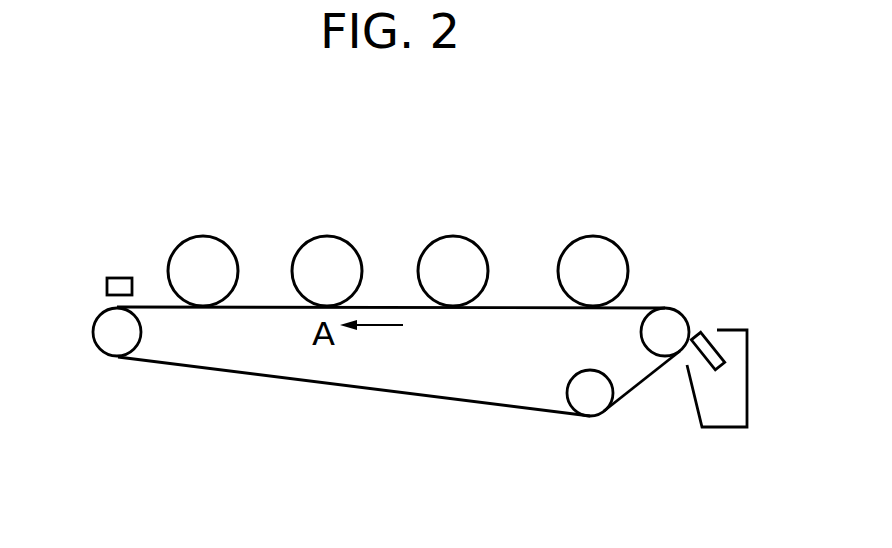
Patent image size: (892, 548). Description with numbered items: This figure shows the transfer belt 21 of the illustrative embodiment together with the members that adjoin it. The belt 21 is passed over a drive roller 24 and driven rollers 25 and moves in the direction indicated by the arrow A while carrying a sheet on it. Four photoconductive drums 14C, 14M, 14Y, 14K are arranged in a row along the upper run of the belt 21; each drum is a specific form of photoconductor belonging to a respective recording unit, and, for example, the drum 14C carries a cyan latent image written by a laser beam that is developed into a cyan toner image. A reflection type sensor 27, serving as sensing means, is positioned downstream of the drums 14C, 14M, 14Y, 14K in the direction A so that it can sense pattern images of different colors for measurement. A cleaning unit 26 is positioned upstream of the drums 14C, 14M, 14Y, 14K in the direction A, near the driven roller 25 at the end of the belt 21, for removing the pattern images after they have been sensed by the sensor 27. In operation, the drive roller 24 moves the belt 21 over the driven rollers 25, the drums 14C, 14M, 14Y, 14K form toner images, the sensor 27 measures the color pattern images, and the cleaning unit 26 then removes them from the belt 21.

The photoconductive drum 14C is at (207, 235).
The photoconductive drum 14M is at (330, 236).
The photoconductive drum 14Y is at (457, 235).
The photoconductive drum 14K is at (600, 235).
The transfer belt 21 is at (190, 367).
The drive roller 24 is at (110, 335).
The driven roller 25 is at (592, 400).
The cleaning unit 26 is at (747, 343).
The reflection type sensor 27 is at (117, 277).